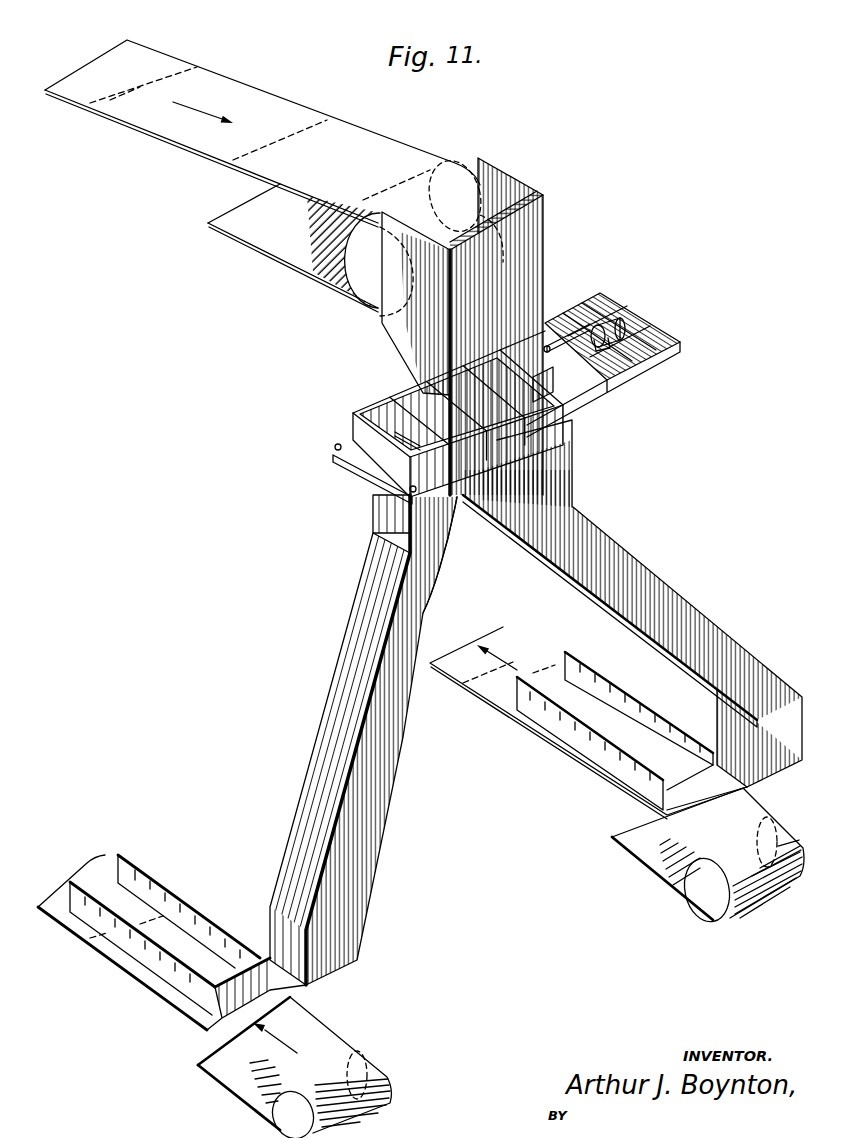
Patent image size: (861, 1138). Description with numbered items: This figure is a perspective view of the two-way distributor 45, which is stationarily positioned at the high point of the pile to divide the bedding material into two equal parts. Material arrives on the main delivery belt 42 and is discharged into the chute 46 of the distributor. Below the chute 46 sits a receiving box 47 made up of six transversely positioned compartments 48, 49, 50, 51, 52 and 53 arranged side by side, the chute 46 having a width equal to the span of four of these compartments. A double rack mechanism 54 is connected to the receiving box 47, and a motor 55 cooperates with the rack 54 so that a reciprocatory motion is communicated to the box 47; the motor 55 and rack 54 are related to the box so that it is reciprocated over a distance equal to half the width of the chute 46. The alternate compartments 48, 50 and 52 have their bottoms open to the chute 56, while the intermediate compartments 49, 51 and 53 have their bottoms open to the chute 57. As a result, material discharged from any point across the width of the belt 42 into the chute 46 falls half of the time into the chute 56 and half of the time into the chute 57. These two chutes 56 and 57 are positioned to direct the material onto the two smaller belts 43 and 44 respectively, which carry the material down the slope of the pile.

The main delivery belt 42 is at (393, 148).
The side belt 43 is at (98, 865).
The side belt 44 is at (495, 700).
The distributor 45 is at (345, 462).
The chute 46 is at (397, 343).
The receiving box 47 is at (367, 412).
The compartment 48 is at (555, 375).
The compartment 49 is at (557, 425).
The compartment 50 is at (532, 442).
The compartment 51 is at (472, 480).
The compartment 52 is at (440, 500).
The compartment 53 is at (378, 472).
The double rack mechanism 54 is at (581, 322).
The motor 55 is at (607, 322).
The chute 56 is at (322, 756).
The chute 57 is at (675, 602).